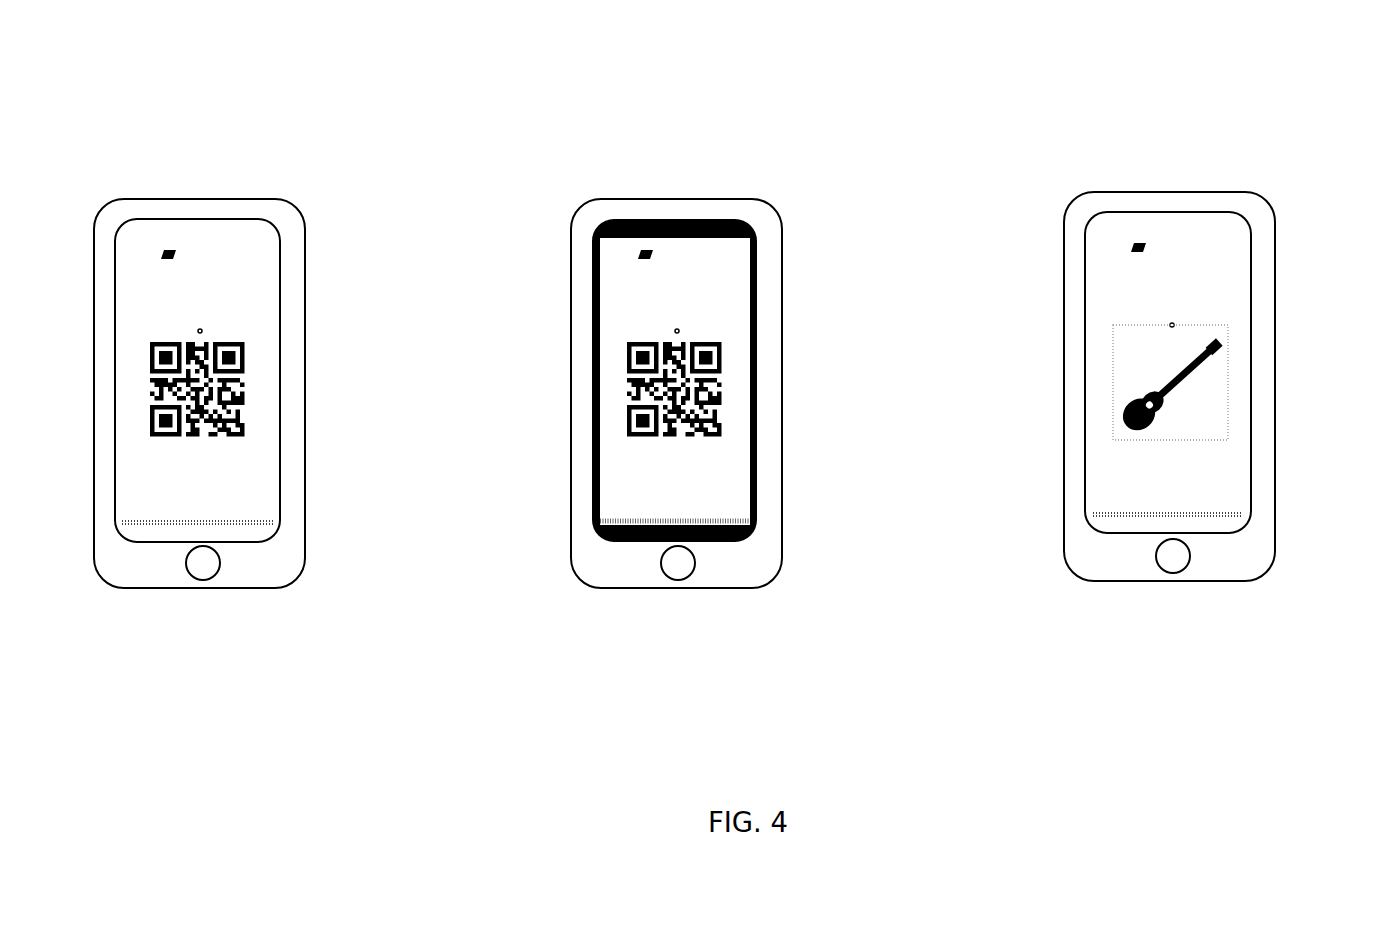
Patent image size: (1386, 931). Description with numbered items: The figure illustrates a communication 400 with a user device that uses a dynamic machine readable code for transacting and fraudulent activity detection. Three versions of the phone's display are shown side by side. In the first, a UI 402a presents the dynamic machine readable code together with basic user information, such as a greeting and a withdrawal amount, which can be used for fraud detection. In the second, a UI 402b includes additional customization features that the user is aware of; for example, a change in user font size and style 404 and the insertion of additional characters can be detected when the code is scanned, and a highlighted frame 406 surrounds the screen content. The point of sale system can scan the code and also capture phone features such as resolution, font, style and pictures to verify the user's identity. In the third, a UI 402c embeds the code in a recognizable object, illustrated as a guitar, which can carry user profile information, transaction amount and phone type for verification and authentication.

The user interface flow 400 is at (1210, 90).
The UI 402a is at (252, 227).
The UI 402b is at (729, 222).
The UI 402c is at (1222, 220).
The style 404 is at (618, 486).
The highlighted border frame 406 is at (757, 486).